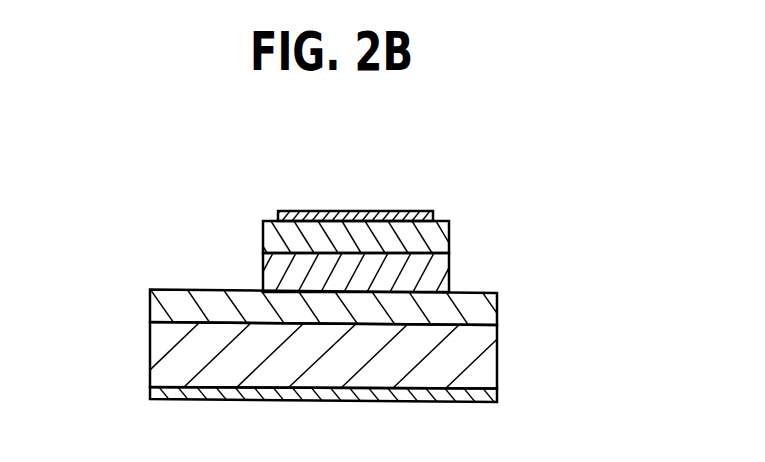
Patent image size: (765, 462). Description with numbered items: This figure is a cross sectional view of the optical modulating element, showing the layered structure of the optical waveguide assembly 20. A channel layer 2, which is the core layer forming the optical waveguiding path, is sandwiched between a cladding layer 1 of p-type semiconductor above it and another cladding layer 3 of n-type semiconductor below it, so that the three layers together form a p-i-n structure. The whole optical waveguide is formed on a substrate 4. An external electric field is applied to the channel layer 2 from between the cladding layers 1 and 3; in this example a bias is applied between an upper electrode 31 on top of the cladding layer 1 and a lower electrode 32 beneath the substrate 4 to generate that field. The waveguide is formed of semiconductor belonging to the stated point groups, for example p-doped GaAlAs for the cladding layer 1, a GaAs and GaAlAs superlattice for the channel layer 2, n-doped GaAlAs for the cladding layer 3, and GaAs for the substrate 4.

The thin film element / heater assembly 20 is at (182, 281).
The electrode 31 is at (342, 211).
The cladding layer 1 is at (450, 235).
The channel layer 2 is at (438, 272).
The cladding layer 3 is at (497, 307).
The substrate 4 is at (497, 351).
The electrode 32 is at (497, 396).